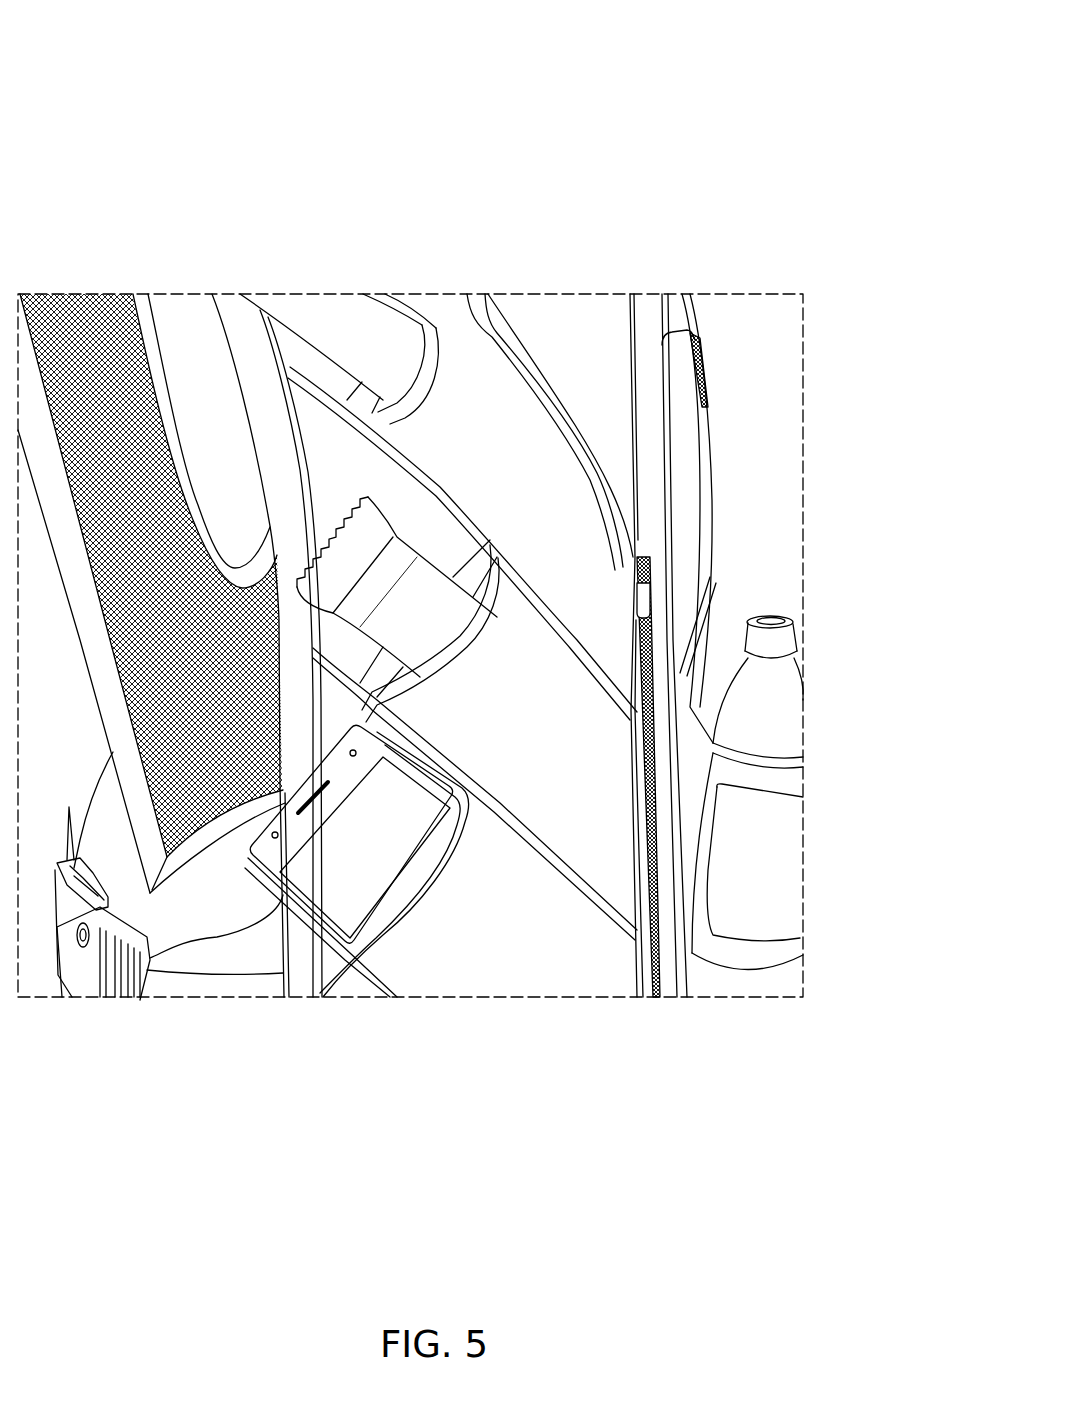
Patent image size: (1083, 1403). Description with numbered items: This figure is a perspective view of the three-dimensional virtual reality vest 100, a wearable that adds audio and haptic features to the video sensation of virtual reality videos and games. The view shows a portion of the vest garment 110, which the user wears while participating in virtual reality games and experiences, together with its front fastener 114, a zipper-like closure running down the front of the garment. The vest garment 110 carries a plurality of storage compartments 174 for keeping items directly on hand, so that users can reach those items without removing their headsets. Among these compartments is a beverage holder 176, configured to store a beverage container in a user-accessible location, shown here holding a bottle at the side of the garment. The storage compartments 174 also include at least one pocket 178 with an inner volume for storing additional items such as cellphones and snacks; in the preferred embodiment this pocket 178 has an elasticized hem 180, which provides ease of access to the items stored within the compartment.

The three-dimensional virtual reality vest 100 is at (600, 104).
The vest garment 110 is at (600, 170).
The front fastener 114 is at (661, 1000).
The storage compartments 174 is at (815, 675).
The beverage holder 176 is at (792, 957).
The pocket 178 is at (493, 930).
The elasticized hem 180 is at (377, 927).